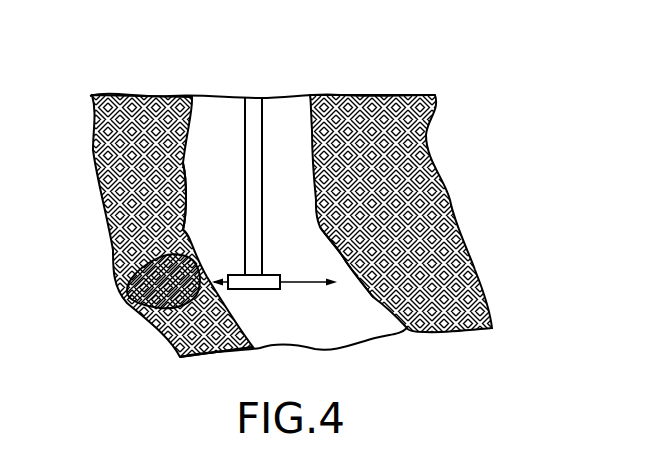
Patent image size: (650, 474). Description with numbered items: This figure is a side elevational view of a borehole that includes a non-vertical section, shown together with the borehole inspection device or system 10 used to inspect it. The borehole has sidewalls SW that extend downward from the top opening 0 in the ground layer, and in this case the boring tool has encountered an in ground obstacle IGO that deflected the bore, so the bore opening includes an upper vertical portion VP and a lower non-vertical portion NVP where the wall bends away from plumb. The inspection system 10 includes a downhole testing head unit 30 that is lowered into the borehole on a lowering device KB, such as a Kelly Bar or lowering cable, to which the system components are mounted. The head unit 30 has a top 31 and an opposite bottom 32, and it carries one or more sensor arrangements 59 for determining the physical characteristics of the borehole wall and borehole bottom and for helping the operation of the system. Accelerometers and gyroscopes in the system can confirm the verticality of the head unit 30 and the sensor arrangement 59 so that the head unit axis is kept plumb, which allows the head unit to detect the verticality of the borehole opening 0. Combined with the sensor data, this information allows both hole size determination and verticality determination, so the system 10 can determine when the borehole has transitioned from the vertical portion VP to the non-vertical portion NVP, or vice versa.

The top opening 0 is at (214, 97).
The borehole inspection device or system 10 is at (283, 80).
The sidewall SW is at (185, 146).
The lowering device KB is at (262, 165).
The vertical portion VP is at (170, 208).
The head unit 30 is at (290, 251).
The top 31 is at (238, 275).
The bottom 32 is at (260, 289).
The sensor arrangement 59 is at (297, 269).
The in ground obstacle IGO is at (148, 284).
The non-vertical portion NVP is at (208, 317).